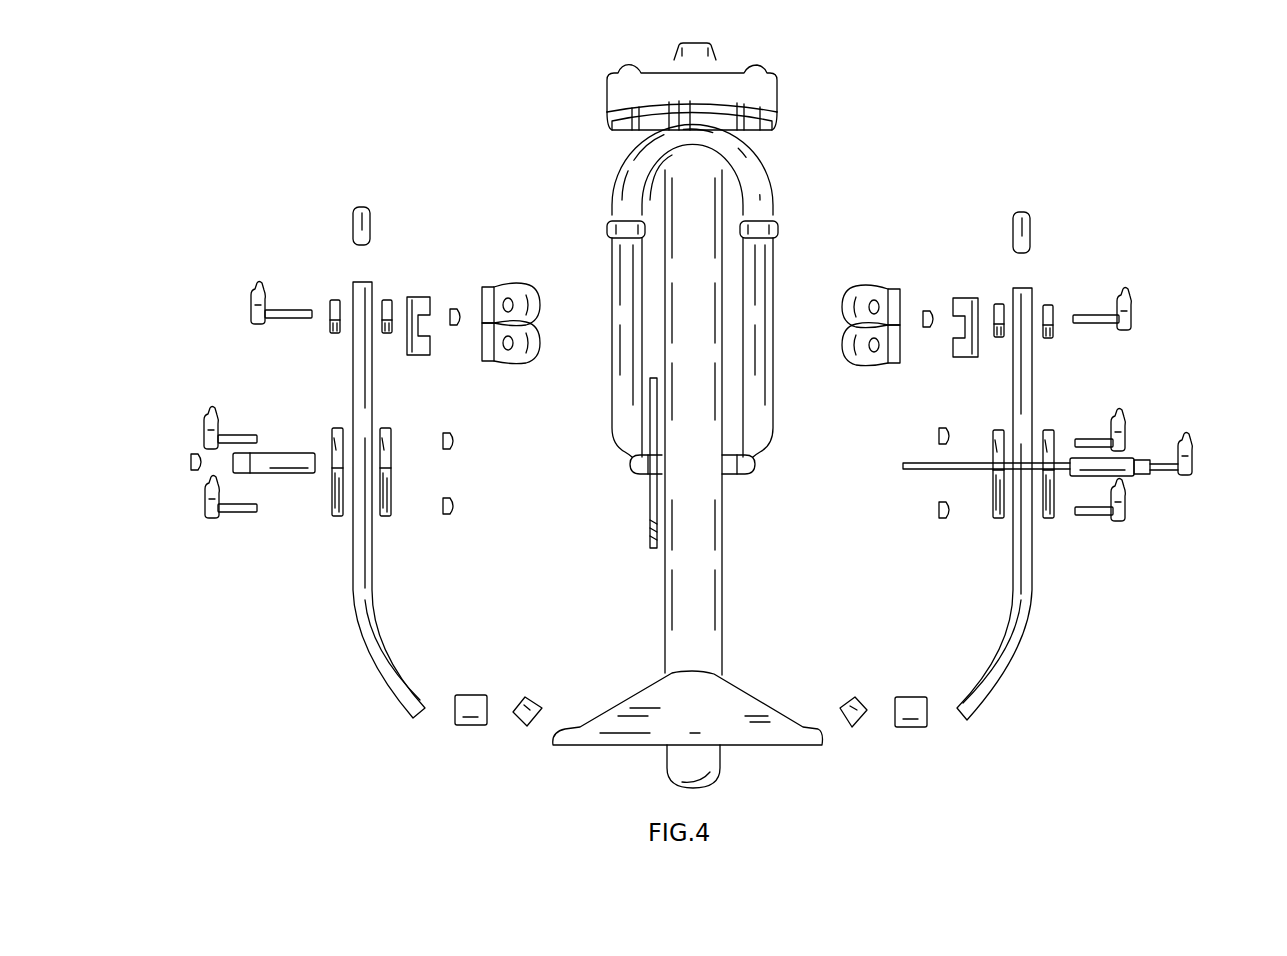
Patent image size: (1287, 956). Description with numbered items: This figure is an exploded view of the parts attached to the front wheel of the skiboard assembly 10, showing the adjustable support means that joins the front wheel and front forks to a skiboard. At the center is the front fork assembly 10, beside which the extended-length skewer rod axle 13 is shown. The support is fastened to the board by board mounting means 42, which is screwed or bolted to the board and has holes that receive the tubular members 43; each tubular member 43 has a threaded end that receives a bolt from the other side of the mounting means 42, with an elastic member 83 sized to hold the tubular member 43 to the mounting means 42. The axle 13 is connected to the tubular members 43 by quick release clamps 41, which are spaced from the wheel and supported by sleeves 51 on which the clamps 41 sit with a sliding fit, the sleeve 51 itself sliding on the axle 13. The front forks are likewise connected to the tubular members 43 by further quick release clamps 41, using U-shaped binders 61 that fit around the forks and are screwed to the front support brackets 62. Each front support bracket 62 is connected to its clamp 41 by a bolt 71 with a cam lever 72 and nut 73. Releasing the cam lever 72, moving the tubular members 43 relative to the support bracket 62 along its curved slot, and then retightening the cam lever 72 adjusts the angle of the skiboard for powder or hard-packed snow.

The fork assembly 10 is at (815, 146).
The axle 13 is at (903, 475).
The quick release clamp 41 is at (333, 300).
The board mounting means 42 is at (472, 726).
The tubular member 43 is at (388, 654).
The sleeve 51 is at (298, 474).
The binder 61 is at (521, 285).
The front support bracket 62 is at (410, 355).
The bolt 71 is at (298, 322).
The cam lever 72 is at (258, 326).
The nut 73 is at (453, 310).
The elastic member 83 is at (534, 702).